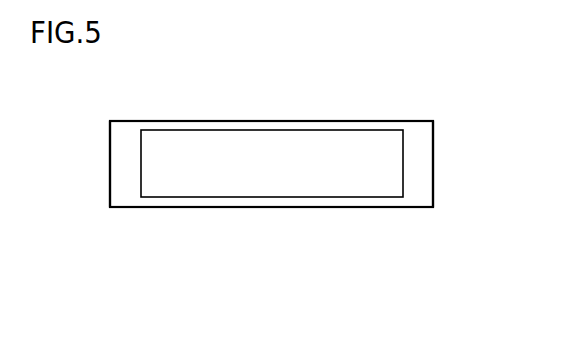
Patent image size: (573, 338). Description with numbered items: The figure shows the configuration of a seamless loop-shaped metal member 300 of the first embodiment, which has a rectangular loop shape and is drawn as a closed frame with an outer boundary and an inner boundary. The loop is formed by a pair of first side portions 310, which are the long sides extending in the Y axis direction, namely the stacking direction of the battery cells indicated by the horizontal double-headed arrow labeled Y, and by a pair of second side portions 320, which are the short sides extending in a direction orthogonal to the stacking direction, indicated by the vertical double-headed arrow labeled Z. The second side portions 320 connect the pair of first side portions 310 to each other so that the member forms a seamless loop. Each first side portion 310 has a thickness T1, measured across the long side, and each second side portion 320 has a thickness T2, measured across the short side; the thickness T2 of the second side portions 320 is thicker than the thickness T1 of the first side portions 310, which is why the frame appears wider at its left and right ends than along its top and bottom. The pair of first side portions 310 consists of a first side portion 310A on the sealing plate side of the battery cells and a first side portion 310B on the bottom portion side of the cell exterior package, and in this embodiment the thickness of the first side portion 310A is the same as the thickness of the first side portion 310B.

The seamless loop-shaped metal member 300 is at (309, 120).
The first side portions 310 is at (513, 75).
The first side portion 310A is at (390, 120).
The first side portion 310B is at (388, 208).
The second side portions 320 is at (110, 163).
The thickness T1 is at (233, 163).
The thickness T2 is at (172, 95).
The Y axis direction Y is at (403, 246).
The Z axis direction Z is at (523, 125).